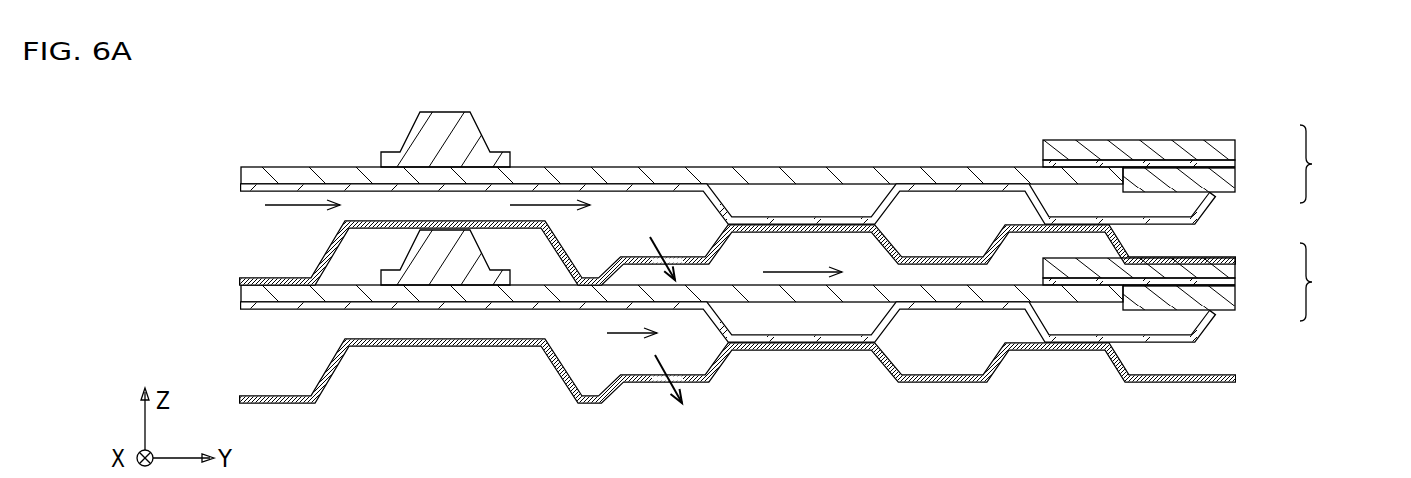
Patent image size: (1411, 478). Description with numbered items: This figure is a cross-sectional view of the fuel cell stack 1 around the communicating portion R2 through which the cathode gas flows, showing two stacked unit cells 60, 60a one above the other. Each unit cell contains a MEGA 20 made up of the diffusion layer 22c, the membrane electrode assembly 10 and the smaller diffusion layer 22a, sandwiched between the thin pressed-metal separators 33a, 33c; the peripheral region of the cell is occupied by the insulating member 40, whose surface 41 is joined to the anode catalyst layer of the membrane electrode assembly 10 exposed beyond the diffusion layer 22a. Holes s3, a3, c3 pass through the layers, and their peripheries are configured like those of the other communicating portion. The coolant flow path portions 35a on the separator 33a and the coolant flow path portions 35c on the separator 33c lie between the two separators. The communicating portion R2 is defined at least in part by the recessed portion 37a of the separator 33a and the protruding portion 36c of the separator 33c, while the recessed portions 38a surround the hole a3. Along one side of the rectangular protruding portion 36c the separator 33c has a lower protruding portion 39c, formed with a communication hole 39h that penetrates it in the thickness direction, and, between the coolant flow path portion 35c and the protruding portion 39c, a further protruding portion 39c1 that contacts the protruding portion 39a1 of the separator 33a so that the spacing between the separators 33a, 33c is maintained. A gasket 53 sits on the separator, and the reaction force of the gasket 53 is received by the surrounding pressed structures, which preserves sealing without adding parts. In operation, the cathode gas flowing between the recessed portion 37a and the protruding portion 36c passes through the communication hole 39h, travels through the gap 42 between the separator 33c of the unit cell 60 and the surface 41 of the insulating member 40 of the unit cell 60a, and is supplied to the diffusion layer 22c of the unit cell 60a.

The heat exchange device 1 is at (1306, 99).
The membrane electrode assembly 10 is at (1222, 164).
The MEGA 20 is at (1320, 223).
The diffusion layer 22a is at (1222, 184).
The diffusion layer 22c is at (1222, 152).
The separator 33a is at (1218, 222).
The separator 33c is at (1236, 260).
The coolant flow path portion 35a is at (1222, 240).
The coolant flow path portion 35c is at (1147, 249).
The protruding portion 36c is at (520, 231).
The recessed portion 37a is at (477, 203).
The recessed portion 38a is at (442, 312).
The protruding portion 39a1 is at (868, 212).
The protruding portion 39c is at (620, 259).
The protruding portion 39c1 is at (803, 243).
The communication hole 39h is at (683, 258).
The insulating member 40 is at (707, 166).
The surface 41 is at (640, 167).
The gap 42 is at (765, 190).
The gasket 53 is at (420, 137).
The unit cell 60 is at (1340, 187).
The unit cell 60a is at (1340, 320).
The communicating portion R2 is at (667, 225).
The hole s3 is at (240, 175).
The hole a3 is at (240, 186).
The hole c3 is at (240, 281).